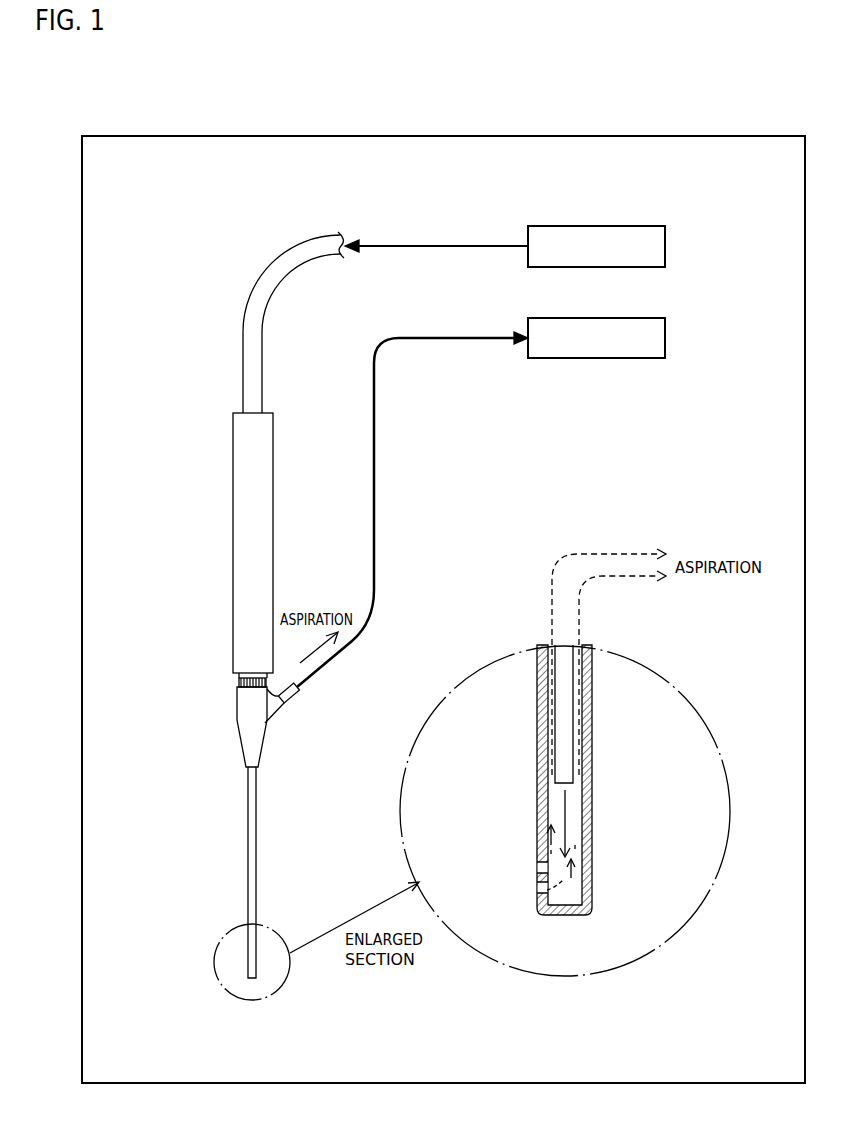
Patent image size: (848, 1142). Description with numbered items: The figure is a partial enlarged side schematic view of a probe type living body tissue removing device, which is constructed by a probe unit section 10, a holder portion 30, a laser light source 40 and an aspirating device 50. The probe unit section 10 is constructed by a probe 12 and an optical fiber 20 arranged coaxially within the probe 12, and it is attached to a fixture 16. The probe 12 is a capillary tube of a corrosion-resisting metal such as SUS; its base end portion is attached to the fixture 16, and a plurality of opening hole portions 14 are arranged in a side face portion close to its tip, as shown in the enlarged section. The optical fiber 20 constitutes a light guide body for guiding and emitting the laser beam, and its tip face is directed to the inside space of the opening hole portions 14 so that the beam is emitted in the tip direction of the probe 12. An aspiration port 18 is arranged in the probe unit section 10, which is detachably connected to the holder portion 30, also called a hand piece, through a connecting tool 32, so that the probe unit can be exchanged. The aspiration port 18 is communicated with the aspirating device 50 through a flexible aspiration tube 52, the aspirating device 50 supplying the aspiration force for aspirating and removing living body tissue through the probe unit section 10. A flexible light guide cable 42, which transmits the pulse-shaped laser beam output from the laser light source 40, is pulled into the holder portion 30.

The probe unit section 10 is at (244, 807).
The probe 12 is at (247, 866).
The opening hole portions 14 is at (537, 867).
The fixture 16 is at (237, 742).
The aspiration port 18 is at (292, 700).
The optical fiber 20 is at (563, 727).
The holder portion 30 is at (233, 524).
The connecting tool 32 is at (239, 682).
The laser light source 40 is at (600, 268).
The light guide cable 42 is at (437, 250).
The aspirating device 50 is at (598, 359).
The aspiration tube 52 is at (437, 341).